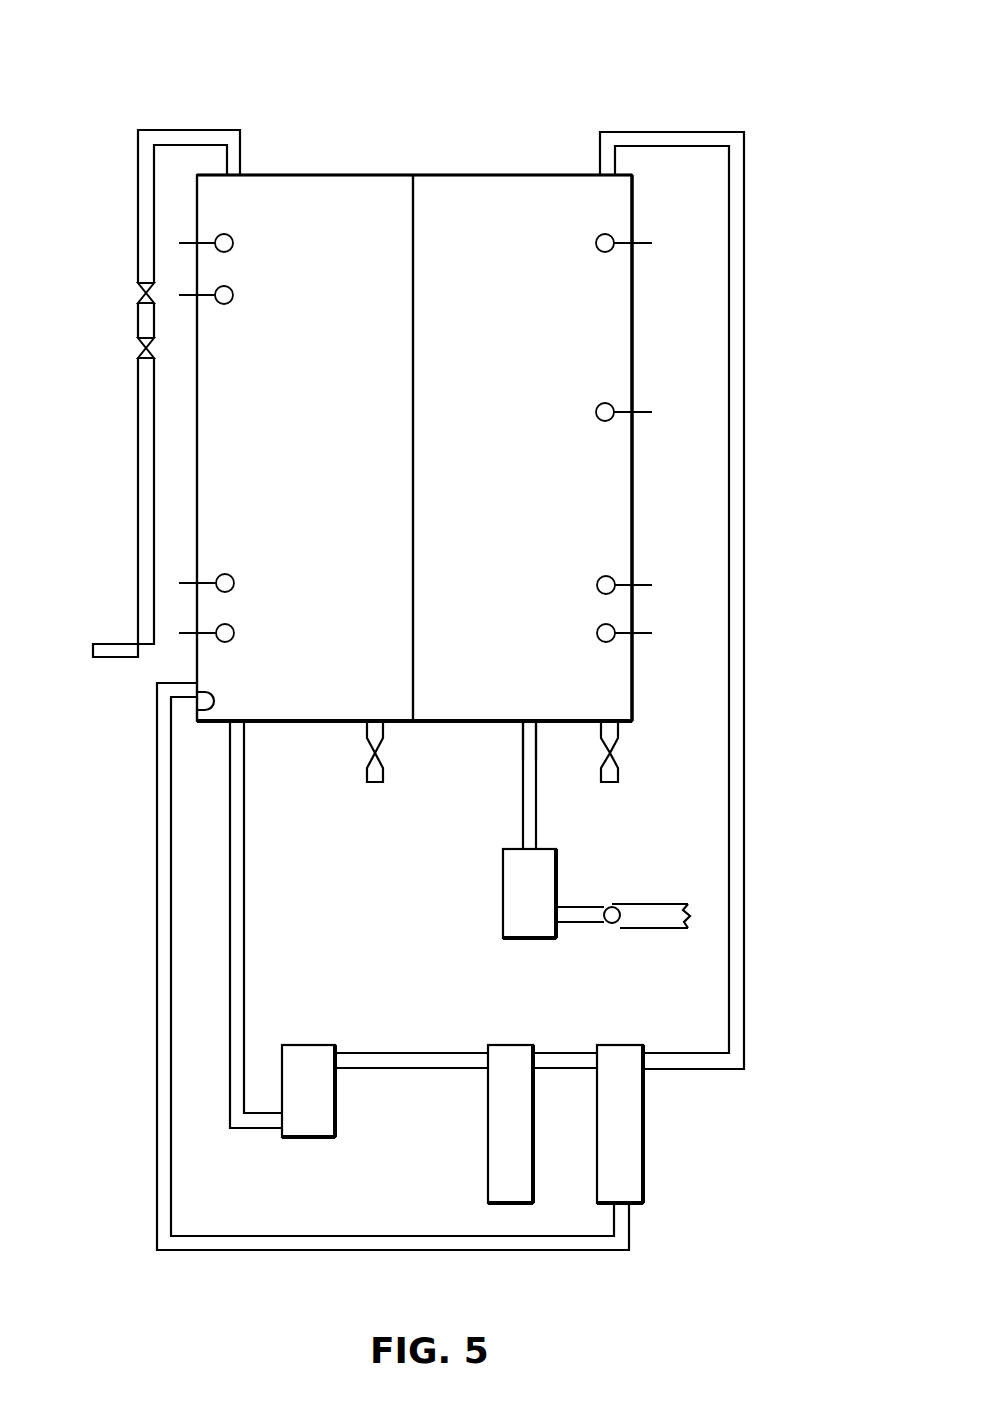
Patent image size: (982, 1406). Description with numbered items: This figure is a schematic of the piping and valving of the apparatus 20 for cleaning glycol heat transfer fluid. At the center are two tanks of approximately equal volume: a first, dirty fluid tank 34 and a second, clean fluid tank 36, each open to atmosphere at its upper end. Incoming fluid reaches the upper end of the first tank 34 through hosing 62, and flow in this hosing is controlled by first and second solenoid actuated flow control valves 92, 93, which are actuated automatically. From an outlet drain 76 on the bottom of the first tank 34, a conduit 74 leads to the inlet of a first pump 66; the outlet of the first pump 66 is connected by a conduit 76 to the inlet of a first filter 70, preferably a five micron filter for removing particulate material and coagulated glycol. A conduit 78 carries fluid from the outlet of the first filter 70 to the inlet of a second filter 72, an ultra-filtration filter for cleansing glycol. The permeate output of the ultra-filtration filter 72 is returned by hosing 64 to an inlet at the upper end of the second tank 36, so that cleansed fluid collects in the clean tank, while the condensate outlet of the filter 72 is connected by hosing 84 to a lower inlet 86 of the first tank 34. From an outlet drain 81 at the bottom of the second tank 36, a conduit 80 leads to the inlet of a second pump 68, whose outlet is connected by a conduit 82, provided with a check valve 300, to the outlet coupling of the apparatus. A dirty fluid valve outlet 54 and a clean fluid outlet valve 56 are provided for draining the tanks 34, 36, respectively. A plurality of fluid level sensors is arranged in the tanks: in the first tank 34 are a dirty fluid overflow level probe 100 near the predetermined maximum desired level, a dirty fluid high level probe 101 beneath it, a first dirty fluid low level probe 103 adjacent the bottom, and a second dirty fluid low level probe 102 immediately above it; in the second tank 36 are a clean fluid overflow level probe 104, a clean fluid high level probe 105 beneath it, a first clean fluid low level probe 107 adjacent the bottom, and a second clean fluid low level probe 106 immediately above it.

The apparatus 20 is at (438, 82).
The first tank 34 is at (333, 457).
The second tank 36 is at (520, 459).
The dirty fluid valve outlet 54 is at (367, 753).
The clean fluid outlet valve 56 is at (620, 748).
The hosing 62 is at (138, 518).
The hosing 64 is at (744, 470).
The first pump 66 is at (302, 1045).
The second pump 68 is at (503, 880).
The first filter 70 is at (505, 1045).
The second filter 72 is at (615, 1045).
The conduit 74 is at (244, 918).
The conduit 76 is at (240, 719).
The conduit 78 is at (567, 1053).
The conduit 80 is at (520, 782).
The outlet drain 81 is at (525, 720).
The conduit 82 is at (582, 907).
The hosing 84 is at (413, 1236).
The lower inlet 86 is at (200, 712).
The first solenoid actuated flow control valve 92 is at (140, 348).
The second solenoid actuated flow control valve 93 is at (140, 291).
The dirty fluid overflow level probe 100 is at (212, 237).
The dirty fluid high level probe 101 is at (208, 299).
The second dirty fluid low level probe 102 is at (208, 580).
The first dirty fluid low level probe 103 is at (207, 637).
The clean fluid overflow level probe 104 is at (620, 238).
The clean fluid high level probe 105 is at (620, 408).
The second clean fluid low level probe 106 is at (623, 578).
The first clean fluid low level probe 107 is at (622, 641).
The check valve 300 is at (610, 905).